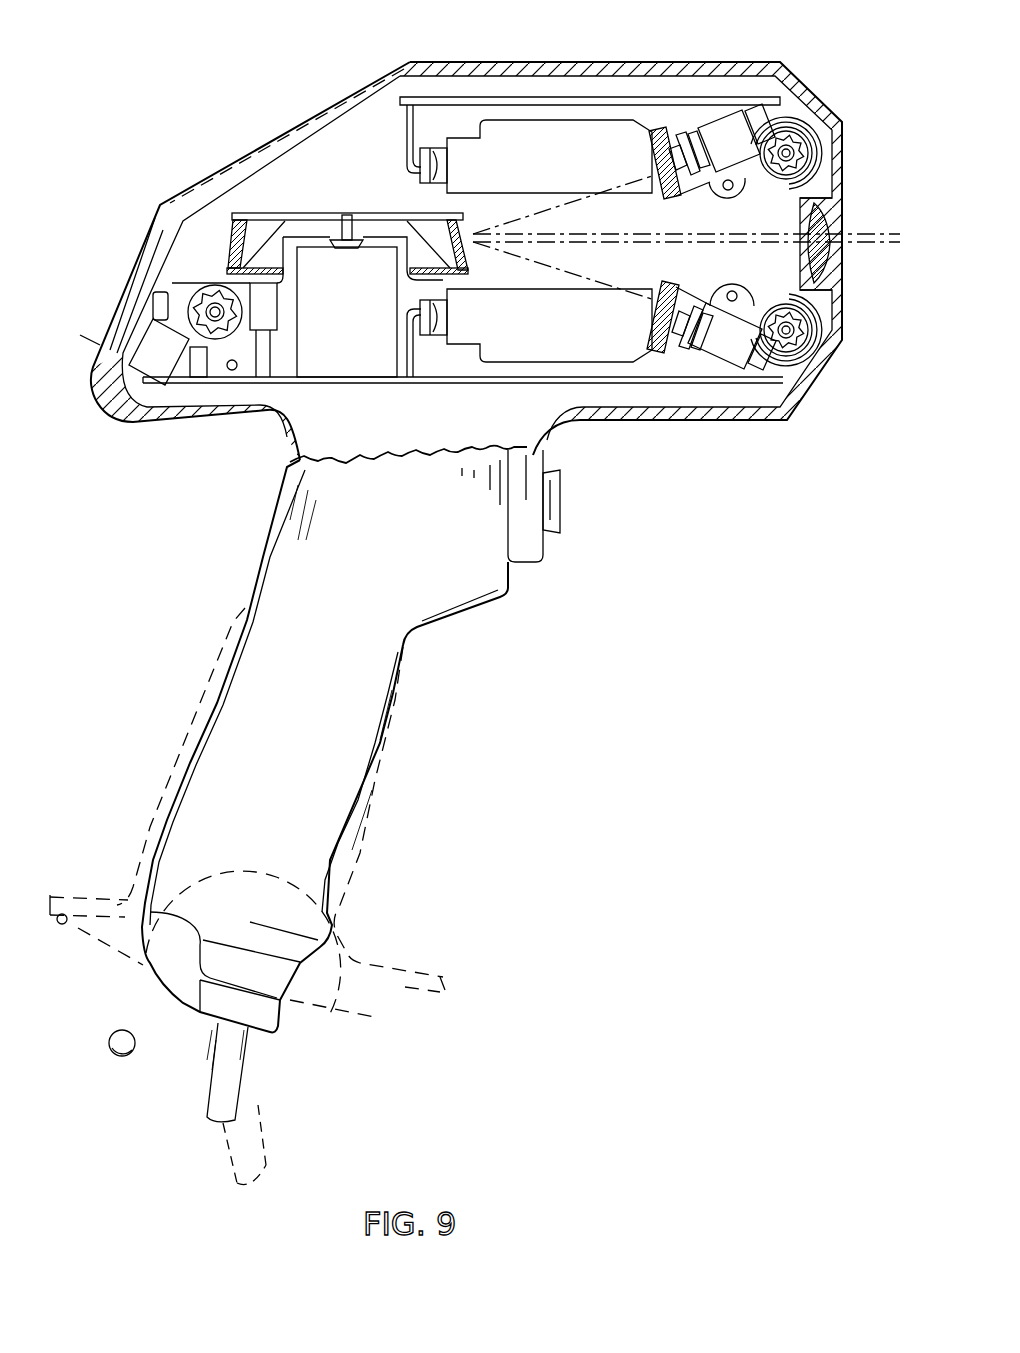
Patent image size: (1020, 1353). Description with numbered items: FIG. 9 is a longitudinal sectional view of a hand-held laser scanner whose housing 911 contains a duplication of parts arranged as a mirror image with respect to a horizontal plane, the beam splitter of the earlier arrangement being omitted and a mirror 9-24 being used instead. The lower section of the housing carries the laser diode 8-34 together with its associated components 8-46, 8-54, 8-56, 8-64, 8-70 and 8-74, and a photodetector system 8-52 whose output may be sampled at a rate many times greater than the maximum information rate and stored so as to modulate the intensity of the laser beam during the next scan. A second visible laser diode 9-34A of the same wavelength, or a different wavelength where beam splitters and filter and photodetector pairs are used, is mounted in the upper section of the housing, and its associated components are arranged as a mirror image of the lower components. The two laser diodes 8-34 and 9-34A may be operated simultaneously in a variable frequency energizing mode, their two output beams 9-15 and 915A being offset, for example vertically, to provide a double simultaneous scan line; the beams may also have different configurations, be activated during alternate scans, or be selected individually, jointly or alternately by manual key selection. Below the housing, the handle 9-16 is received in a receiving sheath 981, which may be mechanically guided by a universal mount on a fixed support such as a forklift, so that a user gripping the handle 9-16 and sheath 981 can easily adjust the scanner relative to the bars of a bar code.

The housing shell 911 is at (307, 122).
The second visible laser diode 9-34A is at (724, 124).
The mirror 9-24 is at (473, 230).
The output beam 915A is at (853, 247).
The output beam 9-15 is at (853, 247).
The lower component 8-56 is at (667, 278).
The lower component 8-64 is at (729, 278).
The lower component 8-54 is at (647, 337).
The lower component 8-74 is at (800, 332).
The photodetector system 8-52 is at (431, 340).
The lower component 8-70 is at (797, 340).
The lower component 8-46 is at (675, 345).
The laser diode 8-34 is at (722, 357).
The handle 9-16 is at (263, 553).
The receiving sheath 981 is at (177, 743).